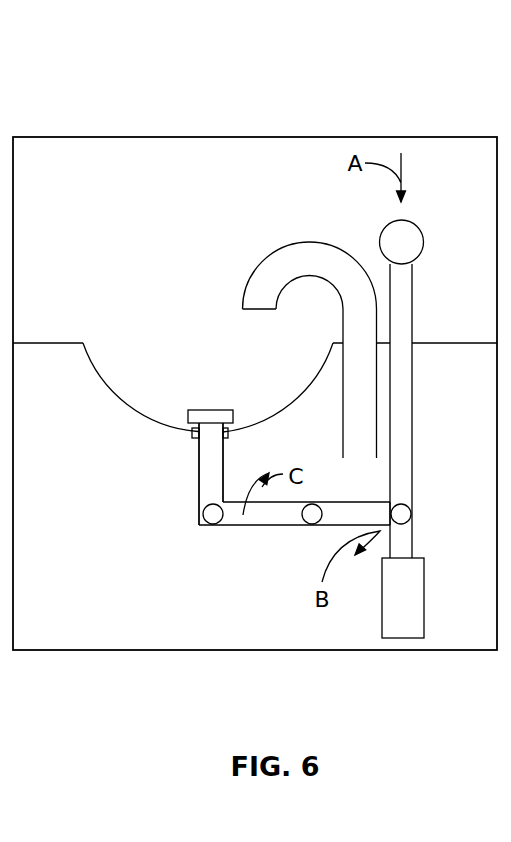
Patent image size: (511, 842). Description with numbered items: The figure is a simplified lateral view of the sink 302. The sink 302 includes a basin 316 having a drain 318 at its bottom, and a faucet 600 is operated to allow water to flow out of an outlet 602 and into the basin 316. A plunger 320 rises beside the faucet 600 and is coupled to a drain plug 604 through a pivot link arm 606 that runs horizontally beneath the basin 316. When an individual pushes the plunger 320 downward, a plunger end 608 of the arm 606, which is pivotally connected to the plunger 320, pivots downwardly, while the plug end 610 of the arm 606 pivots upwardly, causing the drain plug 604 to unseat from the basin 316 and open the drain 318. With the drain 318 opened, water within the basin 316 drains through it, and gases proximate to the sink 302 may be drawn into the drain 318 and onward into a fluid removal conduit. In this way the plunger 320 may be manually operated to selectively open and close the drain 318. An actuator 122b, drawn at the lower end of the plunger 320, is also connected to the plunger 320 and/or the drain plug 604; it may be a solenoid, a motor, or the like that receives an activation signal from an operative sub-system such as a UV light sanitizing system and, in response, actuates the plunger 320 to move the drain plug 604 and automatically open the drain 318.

The sink 302 is at (128, 265).
The basin 316 is at (110, 397).
The drain 318 is at (193, 438).
The plunger 320 is at (413, 222).
The faucet 600 is at (271, 256).
The outlet 602 is at (258, 310).
The drain plug 604 is at (223, 462).
The pivot link arm 606 is at (295, 527).
The plunger end 608 is at (382, 515).
The plug end 610 is at (226, 527).
The actuator 122b is at (428, 594).